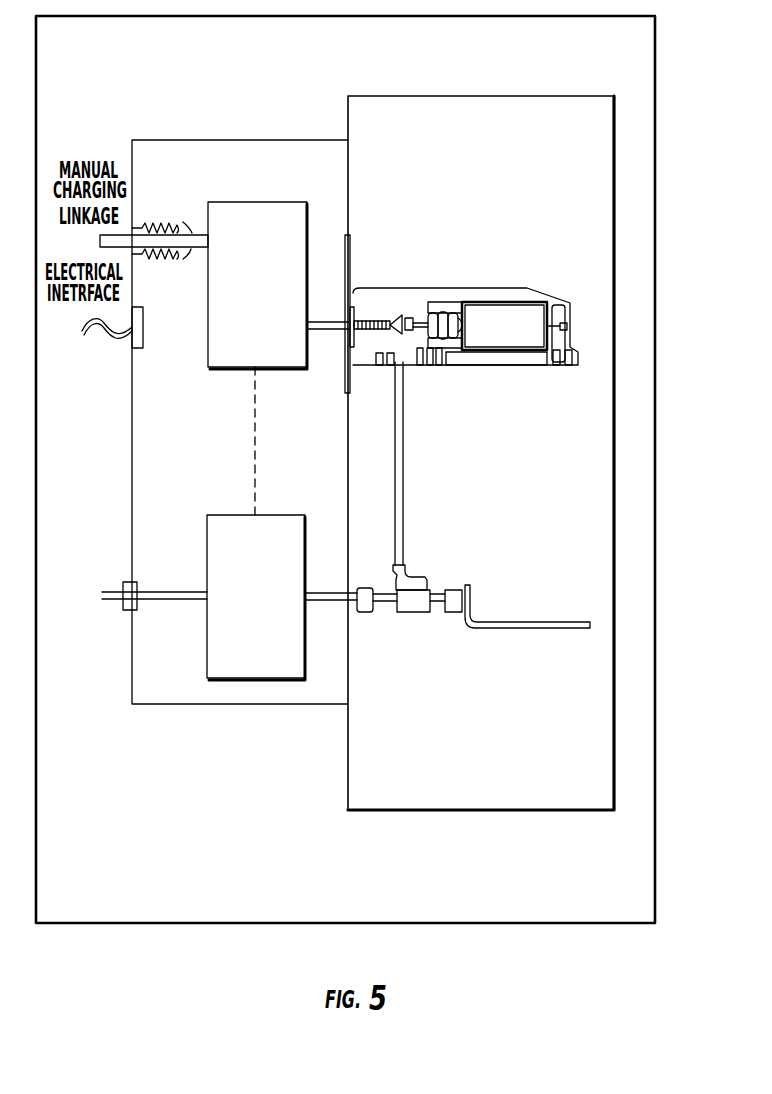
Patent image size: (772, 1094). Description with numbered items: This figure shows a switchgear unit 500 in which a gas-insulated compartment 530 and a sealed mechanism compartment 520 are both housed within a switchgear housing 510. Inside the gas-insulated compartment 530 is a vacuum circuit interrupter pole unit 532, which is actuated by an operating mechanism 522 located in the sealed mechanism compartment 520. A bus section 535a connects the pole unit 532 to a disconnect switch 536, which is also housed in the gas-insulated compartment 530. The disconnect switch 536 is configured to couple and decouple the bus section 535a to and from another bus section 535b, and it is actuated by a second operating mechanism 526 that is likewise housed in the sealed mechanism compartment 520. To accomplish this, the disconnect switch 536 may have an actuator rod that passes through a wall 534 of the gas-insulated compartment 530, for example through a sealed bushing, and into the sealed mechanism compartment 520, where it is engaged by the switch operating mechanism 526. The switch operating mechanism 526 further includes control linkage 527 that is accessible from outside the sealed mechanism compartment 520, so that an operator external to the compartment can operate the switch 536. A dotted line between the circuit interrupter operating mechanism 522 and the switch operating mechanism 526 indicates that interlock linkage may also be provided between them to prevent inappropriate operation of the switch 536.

The switchgear unit 500 is at (378, 496).
The switchgear housing 510 is at (655, 850).
The sealed mechanism compartment 520 is at (242, 705).
The operating mechanism 522 is at (297, 202).
The second operating mechanism 526 is at (283, 515).
The control linkage 527 is at (153, 600).
The gas-insulated compartment 530 is at (523, 811).
The vacuum circuit interrupter pole unit 532 is at (527, 292).
The wall 534 is at (350, 278).
The bus section 535a is at (403, 435).
The another bus section 535b is at (537, 621).
The disconnect switch 536 is at (422, 571).